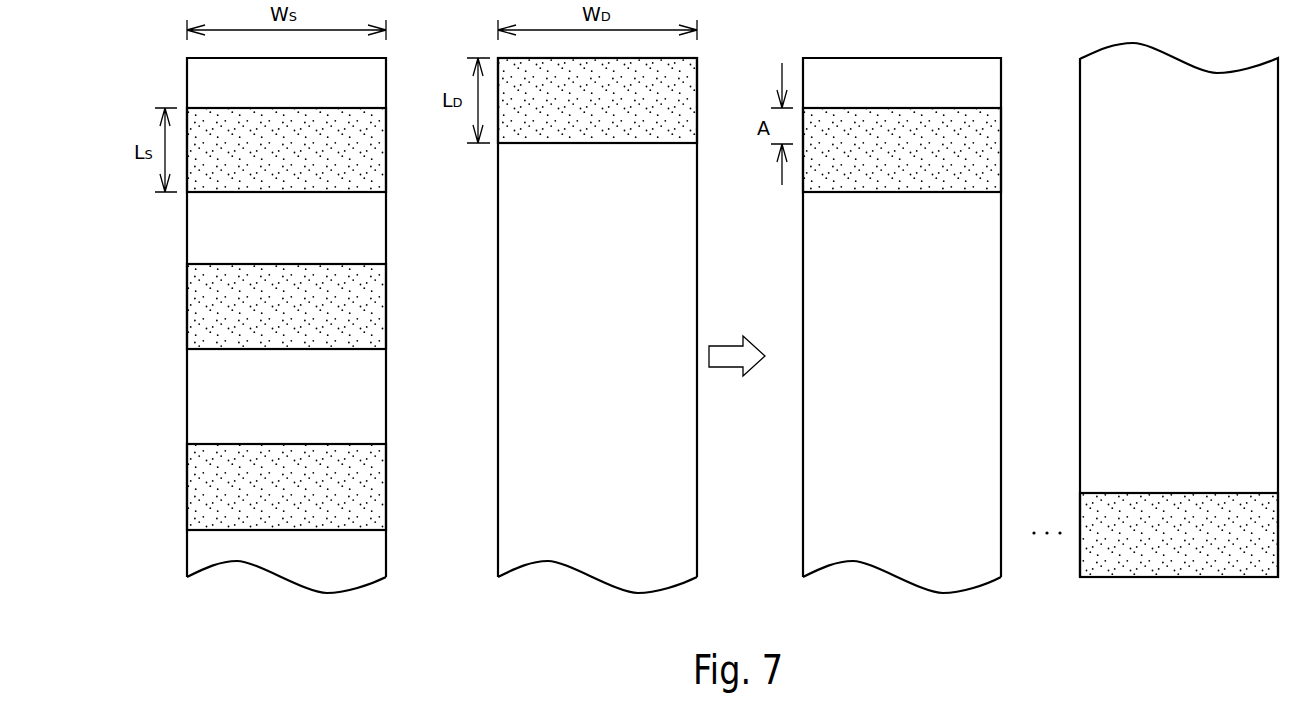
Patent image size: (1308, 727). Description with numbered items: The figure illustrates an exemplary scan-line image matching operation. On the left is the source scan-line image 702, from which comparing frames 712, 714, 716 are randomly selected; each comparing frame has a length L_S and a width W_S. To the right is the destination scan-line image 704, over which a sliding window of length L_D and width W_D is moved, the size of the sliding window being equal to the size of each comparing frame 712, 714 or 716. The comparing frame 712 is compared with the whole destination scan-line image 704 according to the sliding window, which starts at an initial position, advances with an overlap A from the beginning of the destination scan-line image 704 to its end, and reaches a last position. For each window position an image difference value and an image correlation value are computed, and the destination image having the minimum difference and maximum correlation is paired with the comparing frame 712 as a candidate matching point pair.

The source scan-line image 702 is at (315, 357).
The destination scan-line image 704 is at (888, 349).
The comparing frame 712 is at (370, 156).
The comparing frame 714 is at (370, 310).
The comparing frame 716 is at (370, 492).